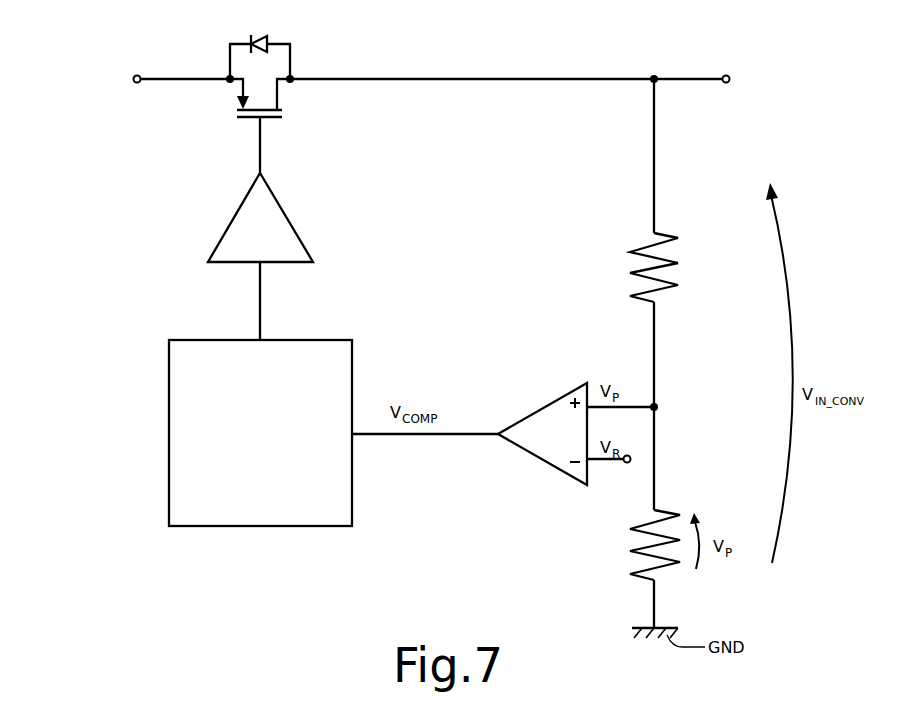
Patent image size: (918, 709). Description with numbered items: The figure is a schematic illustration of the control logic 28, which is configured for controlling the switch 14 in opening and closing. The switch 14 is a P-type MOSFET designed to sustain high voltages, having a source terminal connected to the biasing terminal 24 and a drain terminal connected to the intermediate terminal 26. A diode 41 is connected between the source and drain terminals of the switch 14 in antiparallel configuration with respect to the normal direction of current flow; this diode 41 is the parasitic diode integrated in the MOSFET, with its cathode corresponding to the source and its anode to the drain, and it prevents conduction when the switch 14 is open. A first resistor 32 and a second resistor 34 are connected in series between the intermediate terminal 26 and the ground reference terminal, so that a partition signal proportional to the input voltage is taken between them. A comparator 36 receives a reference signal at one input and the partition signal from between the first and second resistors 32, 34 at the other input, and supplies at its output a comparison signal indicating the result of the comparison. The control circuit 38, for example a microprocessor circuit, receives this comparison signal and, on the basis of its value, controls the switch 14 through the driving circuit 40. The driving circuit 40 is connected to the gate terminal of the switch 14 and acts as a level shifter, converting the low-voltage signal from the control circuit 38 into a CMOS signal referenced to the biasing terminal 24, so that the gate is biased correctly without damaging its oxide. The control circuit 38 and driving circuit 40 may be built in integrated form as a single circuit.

The control logic 28 is at (61, 19).
The biasing terminal 24 is at (135, 86).
The intermediate terminal 26 is at (728, 73).
The diode 41 is at (263, 36).
The switch 14 is at (274, 119).
The driving circuit 40 is at (284, 209).
The control circuit 38 is at (168, 435).
The comparator 36 is at (545, 463).
The first resistor 32 is at (662, 292).
The second resistor 34 is at (668, 510).